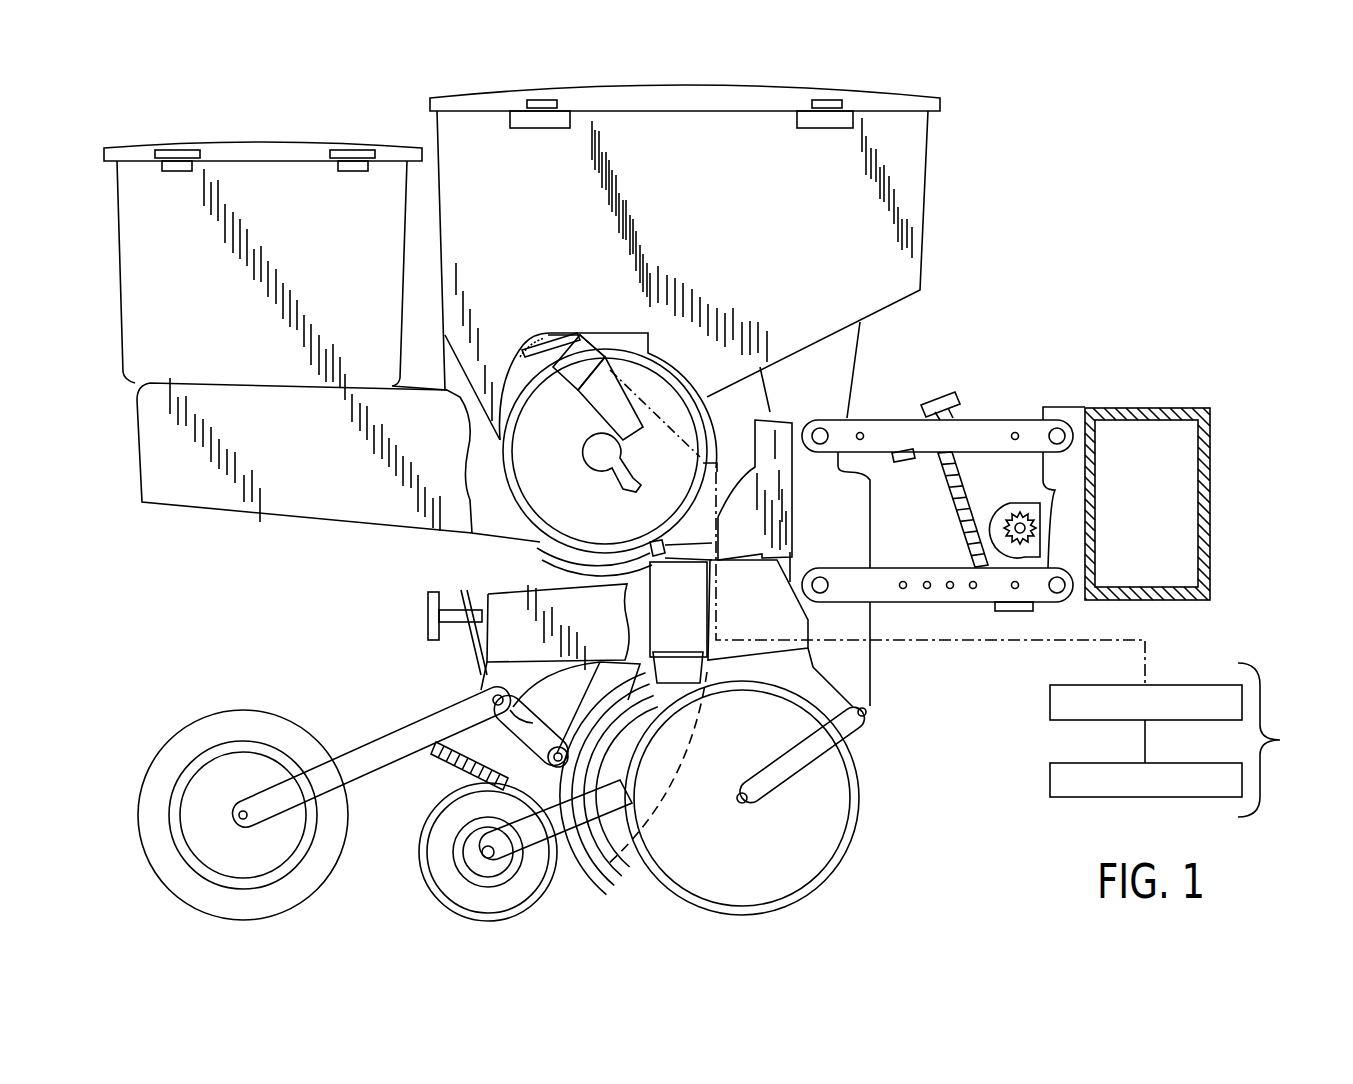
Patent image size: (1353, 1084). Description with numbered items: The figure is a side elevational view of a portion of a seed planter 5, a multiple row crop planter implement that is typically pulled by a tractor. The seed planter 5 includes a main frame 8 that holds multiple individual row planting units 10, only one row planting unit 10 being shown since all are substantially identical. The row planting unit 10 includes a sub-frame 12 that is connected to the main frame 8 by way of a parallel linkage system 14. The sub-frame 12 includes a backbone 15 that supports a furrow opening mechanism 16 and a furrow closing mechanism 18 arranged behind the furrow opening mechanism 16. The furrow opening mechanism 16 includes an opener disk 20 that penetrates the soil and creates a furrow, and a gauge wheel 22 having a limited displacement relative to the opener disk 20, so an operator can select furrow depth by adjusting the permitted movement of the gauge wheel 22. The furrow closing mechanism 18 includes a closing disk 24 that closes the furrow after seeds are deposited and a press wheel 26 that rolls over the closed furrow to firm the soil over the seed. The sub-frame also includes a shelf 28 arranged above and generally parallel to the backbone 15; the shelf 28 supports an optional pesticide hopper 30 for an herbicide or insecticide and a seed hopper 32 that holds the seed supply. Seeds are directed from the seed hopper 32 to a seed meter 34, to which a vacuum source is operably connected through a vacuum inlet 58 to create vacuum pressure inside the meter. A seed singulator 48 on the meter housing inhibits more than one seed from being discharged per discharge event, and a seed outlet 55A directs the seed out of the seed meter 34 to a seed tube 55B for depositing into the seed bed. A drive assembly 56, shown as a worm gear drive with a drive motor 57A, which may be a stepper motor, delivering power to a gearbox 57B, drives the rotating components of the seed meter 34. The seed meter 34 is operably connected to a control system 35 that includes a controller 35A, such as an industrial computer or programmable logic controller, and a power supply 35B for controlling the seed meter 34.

The seed planter 5 is at (1043, 192).
The main frame 8 is at (1175, 406).
The row planting unit 10 is at (935, 268).
The sub-frame 12 is at (878, 517).
The parallel linkage system 14 is at (990, 414).
The backbone 15 is at (488, 595).
The furrow opening mechanism 16 is at (890, 806).
The furrow closing mechanism 18 is at (391, 857).
The opener disk 20 is at (800, 895).
The gauge wheel 22 is at (815, 850).
The closing disk 24 is at (525, 895).
The press wheel 26 is at (178, 750).
The shelf 28 is at (172, 490).
The pesticide hopper 30 is at (358, 258).
The seed hopper 32 is at (790, 188).
The seed meter 34 is at (670, 372).
The control system 35 is at (1138, 740).
The controller 35A is at (1050, 705).
The power supply 35B is at (1050, 783).
The seed singulator 48 is at (569, 332).
The seed outlet 55A is at (612, 568).
The seed tube 55B is at (680, 768).
The drive assembly 56 is at (608, 349).
The drive motor 57A is at (601, 344).
The gearbox 57B is at (598, 413).
The vacuum inlet 58 is at (598, 466).